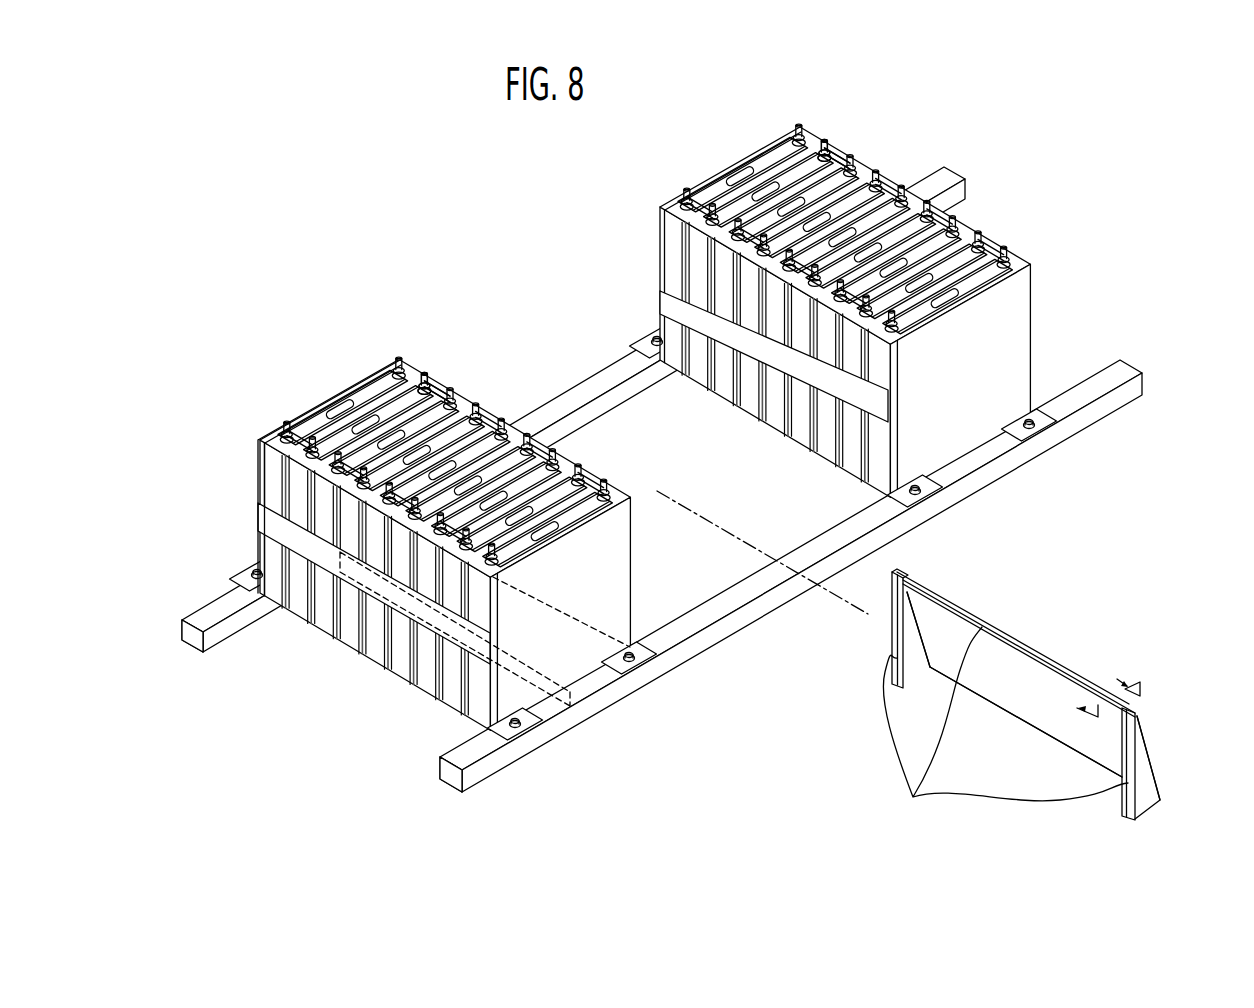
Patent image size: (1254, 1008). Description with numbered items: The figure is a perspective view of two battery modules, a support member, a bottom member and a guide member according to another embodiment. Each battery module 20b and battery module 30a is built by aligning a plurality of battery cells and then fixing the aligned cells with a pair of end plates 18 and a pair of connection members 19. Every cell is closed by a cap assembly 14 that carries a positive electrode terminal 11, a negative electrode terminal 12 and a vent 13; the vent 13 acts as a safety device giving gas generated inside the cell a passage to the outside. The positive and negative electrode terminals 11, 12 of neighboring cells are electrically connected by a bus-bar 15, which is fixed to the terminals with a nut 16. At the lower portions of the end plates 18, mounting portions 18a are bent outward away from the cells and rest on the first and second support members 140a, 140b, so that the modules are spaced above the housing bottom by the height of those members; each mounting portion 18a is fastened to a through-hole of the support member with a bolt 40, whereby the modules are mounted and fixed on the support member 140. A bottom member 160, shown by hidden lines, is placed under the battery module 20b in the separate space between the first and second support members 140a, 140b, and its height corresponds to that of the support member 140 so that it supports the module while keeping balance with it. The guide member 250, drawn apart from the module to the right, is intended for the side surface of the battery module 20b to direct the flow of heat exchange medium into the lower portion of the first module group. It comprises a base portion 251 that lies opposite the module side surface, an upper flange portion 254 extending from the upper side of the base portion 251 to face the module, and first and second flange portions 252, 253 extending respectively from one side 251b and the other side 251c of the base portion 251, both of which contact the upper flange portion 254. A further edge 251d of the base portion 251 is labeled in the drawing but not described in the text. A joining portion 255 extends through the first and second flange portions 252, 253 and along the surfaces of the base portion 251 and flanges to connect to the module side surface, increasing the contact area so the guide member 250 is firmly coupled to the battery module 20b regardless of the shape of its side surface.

The positive electrode terminal 11 is at (795, 126).
The negative electrode terminal 12 is at (692, 191).
The vent 13 is at (741, 172).
The cap assembly 14 is at (716, 193).
The bus-bar 15 is at (844, 158).
The nut 16 is at (821, 150).
The end plate 18 is at (255, 484).
The mounting portion 18a is at (634, 662).
The connection member 19 is at (265, 520).
The battery module 20b is at (413, 510).
The battery module 30a is at (705, 116).
The bolt 40 is at (615, 665).
The support member 140 is at (322, 793).
The first support member 140a is at (446, 769).
The second support member 140b is at (196, 638).
The bottom member 160 is at (598, 633).
The guide member 250 is at (1061, 691).
The base portion 251 is at (1062, 672).
The one side of the base portion 251b is at (918, 608).
The other side of the base portion 251c is at (1148, 750).
The bottom edge of plate 251d is at (1037, 730).
The first flange portion 252 is at (915, 668).
The second flange portion 253 is at (1148, 808).
The upper flange portion 254 is at (970, 612).
The joining portion 255 is at (1005, 730).